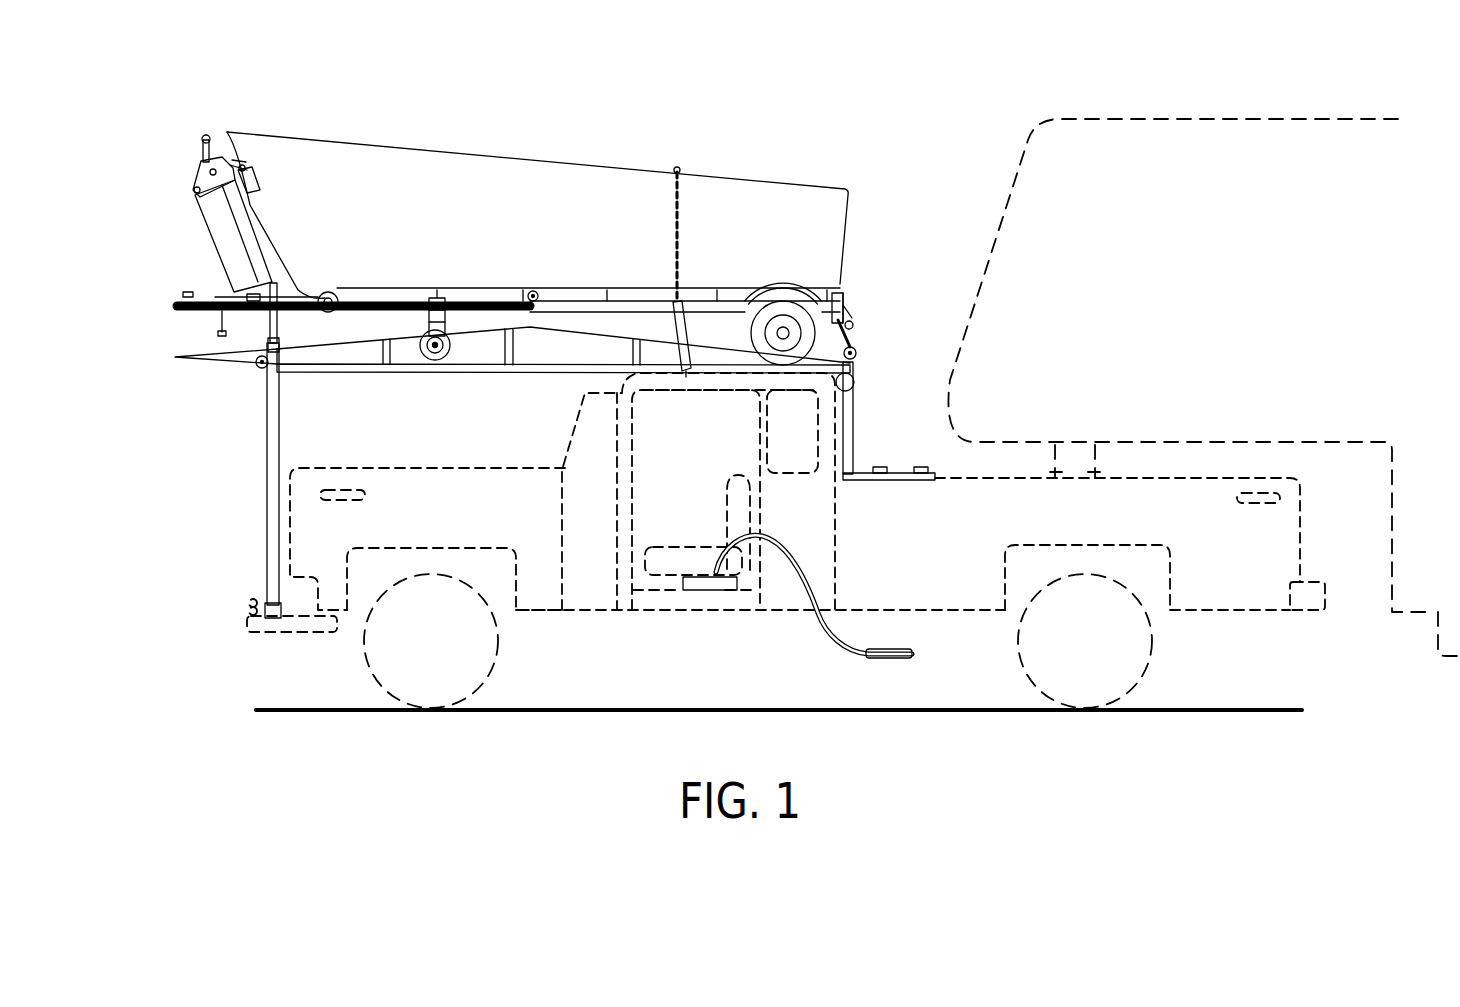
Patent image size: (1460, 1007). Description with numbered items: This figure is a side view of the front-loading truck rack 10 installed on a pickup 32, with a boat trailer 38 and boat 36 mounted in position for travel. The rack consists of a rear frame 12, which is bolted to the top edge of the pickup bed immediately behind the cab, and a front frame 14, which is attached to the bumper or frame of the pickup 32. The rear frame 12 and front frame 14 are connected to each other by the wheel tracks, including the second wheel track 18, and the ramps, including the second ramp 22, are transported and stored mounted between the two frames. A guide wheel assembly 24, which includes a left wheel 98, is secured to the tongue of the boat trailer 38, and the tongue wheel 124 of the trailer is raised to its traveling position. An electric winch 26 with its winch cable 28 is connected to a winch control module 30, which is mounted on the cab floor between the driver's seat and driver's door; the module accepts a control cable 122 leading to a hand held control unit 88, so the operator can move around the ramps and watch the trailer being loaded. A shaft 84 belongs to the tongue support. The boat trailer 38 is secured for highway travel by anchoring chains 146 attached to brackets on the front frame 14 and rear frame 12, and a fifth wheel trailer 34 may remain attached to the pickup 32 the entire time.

The front-loading truck rack 10 is at (226, 459).
The rear frame 12 is at (853, 424).
The front frame 14 is at (267, 420).
The second wheel track 18 is at (383, 372).
The second ramp 22 is at (256, 364).
The guide wheel assembly 24 is at (429, 320).
The electric winch 26 is at (858, 352).
The winch cable 28 is at (856, 323).
The winch control module 30 is at (710, 584).
The pickup 32 is at (1248, 603).
The fifth wheel trailer 34 is at (1128, 132).
The boat 36 is at (453, 160).
The boat trailer 38 is at (604, 285).
The shaft 84 is at (265, 331).
The hand held control unit 88 is at (913, 654).
The left wheel 98 is at (455, 362).
The control cable 122 is at (818, 633).
The tongue wheel 124 is at (336, 296).
The anchoring chains 146 is at (850, 306).